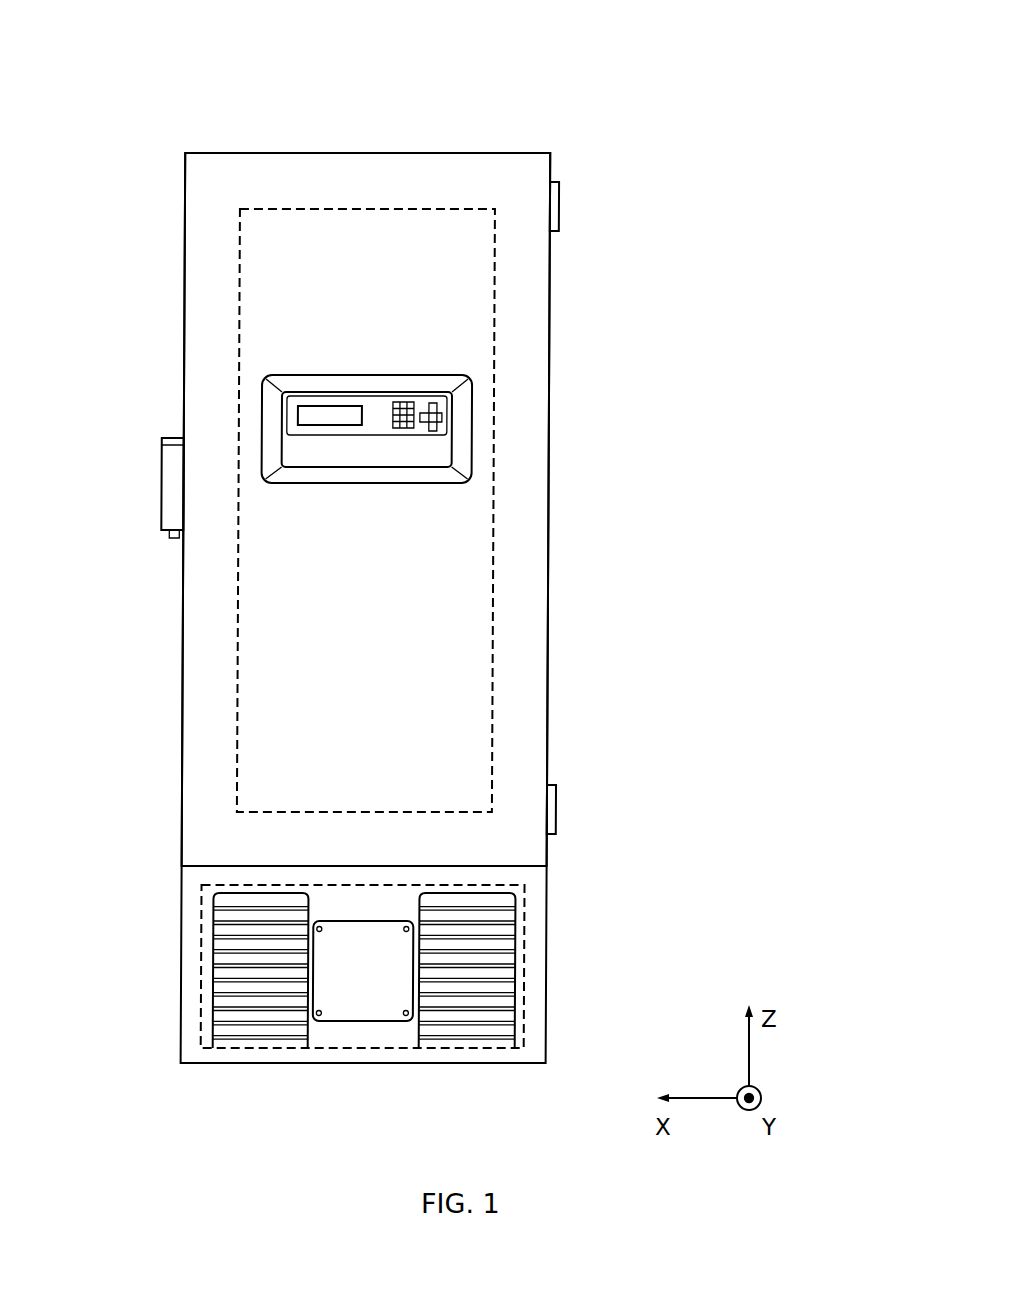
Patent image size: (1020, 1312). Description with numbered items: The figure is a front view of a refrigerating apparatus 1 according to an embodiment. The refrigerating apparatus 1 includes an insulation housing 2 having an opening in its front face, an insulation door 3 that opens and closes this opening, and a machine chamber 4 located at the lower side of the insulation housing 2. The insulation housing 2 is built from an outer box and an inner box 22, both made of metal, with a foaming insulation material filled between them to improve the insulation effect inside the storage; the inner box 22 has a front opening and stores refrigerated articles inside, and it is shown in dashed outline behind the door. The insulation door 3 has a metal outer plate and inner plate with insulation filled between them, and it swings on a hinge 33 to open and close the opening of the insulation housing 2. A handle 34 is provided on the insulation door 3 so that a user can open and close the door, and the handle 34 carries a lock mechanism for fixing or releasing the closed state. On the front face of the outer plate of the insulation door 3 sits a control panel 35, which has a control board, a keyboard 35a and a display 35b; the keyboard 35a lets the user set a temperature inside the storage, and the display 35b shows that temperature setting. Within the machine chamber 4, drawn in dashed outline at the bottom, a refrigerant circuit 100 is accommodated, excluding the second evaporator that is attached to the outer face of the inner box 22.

The refrigerating apparatus 1 is at (569, 77).
The insulation housing 2 is at (571, 591).
The insulation door 3 is at (562, 440).
The inner box 22 is at (496, 690).
The hinge 33 is at (560, 198).
The handle 34 is at (164, 508).
The control panel 35 is at (474, 400).
The keyboard 35a is at (417, 405).
The display 35b is at (315, 405).
The machine chamber 4 is at (540, 929).
The refrigerant circuit 100 is at (529, 1000).